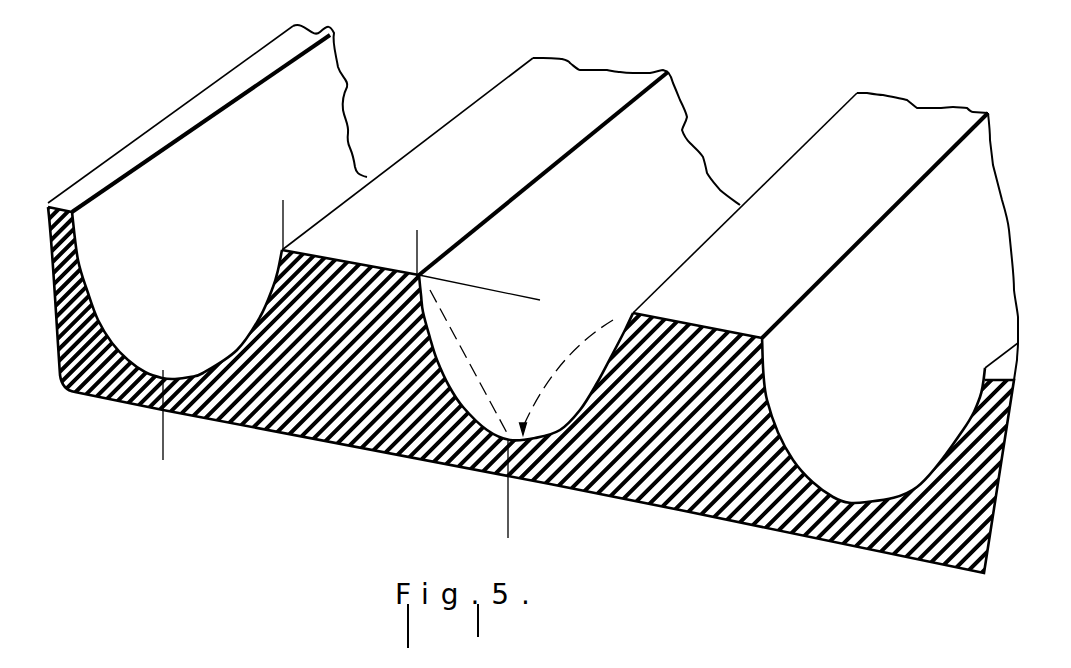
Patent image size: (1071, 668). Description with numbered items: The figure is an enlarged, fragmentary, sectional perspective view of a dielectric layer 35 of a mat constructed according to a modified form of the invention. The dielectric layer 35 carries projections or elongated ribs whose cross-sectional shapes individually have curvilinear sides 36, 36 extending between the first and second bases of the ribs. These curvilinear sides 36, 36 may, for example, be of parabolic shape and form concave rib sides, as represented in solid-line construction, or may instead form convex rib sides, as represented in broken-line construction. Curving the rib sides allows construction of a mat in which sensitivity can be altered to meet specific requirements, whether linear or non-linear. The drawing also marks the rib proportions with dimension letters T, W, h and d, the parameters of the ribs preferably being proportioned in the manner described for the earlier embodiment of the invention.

The dielectric layer 35 is at (853, 250).
The curvilinear sides 36 is at (82, 270).
The land width dimension T is at (415, 242).
The groove pitch width dimension W is at (507, 517).
The groove depth dimension h is at (510, 297).
The base thickness dimension d is at (523, 493).